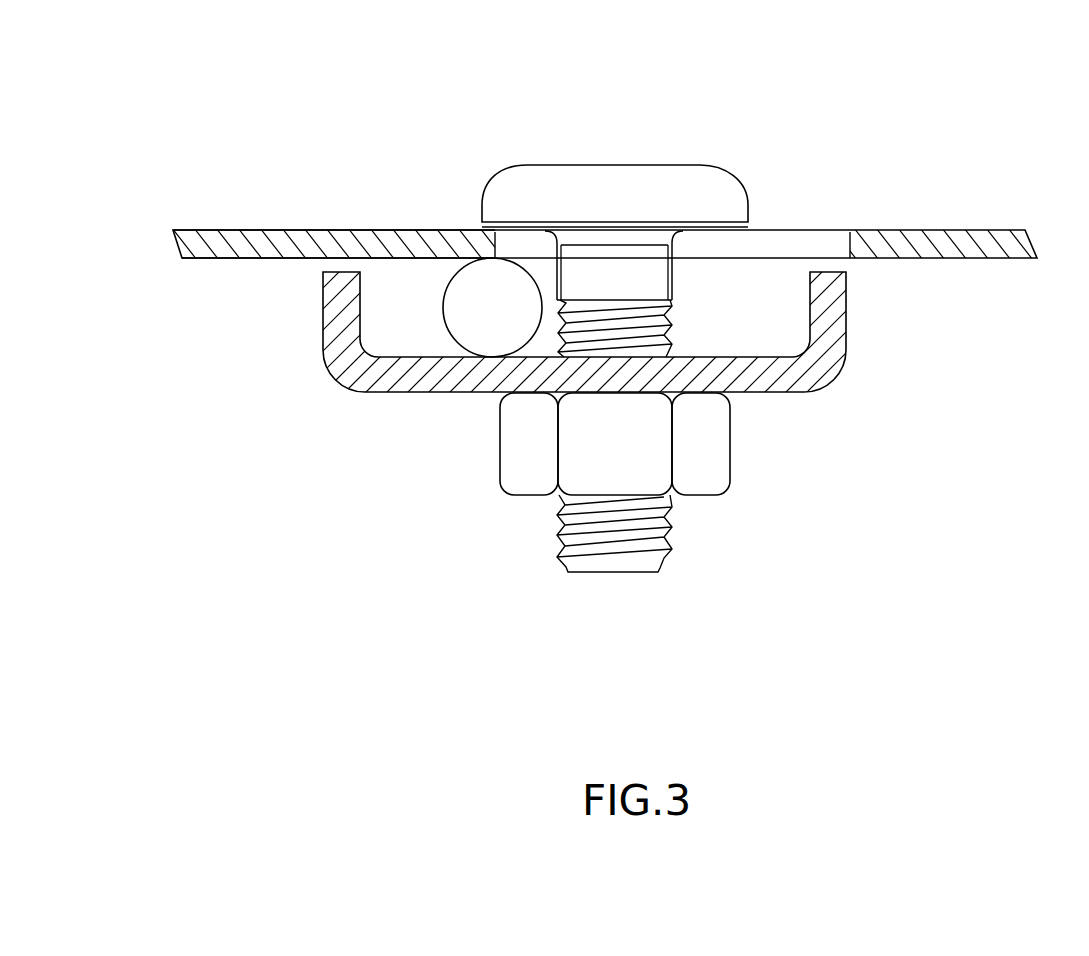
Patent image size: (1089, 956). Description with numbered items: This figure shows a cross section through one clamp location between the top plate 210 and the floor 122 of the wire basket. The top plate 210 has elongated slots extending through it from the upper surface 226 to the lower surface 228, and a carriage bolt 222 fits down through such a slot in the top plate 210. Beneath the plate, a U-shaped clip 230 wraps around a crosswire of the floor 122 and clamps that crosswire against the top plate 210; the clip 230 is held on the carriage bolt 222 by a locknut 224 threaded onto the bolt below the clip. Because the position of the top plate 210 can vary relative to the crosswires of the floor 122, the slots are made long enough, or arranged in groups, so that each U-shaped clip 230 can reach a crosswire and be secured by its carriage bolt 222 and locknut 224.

The top plate 210 is at (970, 230).
The carriage bolt 222 is at (693, 165).
The locknut 224 is at (688, 427).
The upper surface 226 is at (208, 230).
The lower surface 228 is at (222, 260).
The U-shaped clip 230 is at (340, 378).
The floor 122 is at (482, 318).